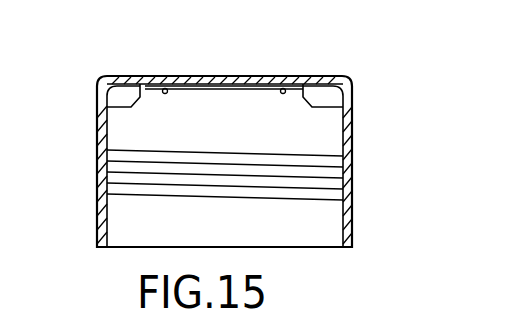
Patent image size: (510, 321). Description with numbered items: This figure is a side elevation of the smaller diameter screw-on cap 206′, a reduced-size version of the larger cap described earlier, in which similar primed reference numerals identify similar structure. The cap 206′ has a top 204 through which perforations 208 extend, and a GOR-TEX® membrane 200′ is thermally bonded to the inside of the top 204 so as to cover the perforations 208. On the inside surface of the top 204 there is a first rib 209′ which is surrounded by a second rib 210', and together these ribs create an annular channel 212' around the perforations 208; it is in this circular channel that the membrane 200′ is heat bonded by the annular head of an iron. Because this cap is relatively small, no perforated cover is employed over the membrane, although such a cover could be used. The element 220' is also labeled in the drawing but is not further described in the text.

The liner 200′ is at (222, 92).
The closure cap 204 is at (313, 78).
The top wall inner corner 206′ is at (146, 77).
The top wall 208 is at (222, 77).
The liner retaining beads 209′ is at (166, 94).
The skirt 210' is at (192, 176).
The retention lugs 212' is at (236, 126).
The inner shoulder 220' is at (335, 57).